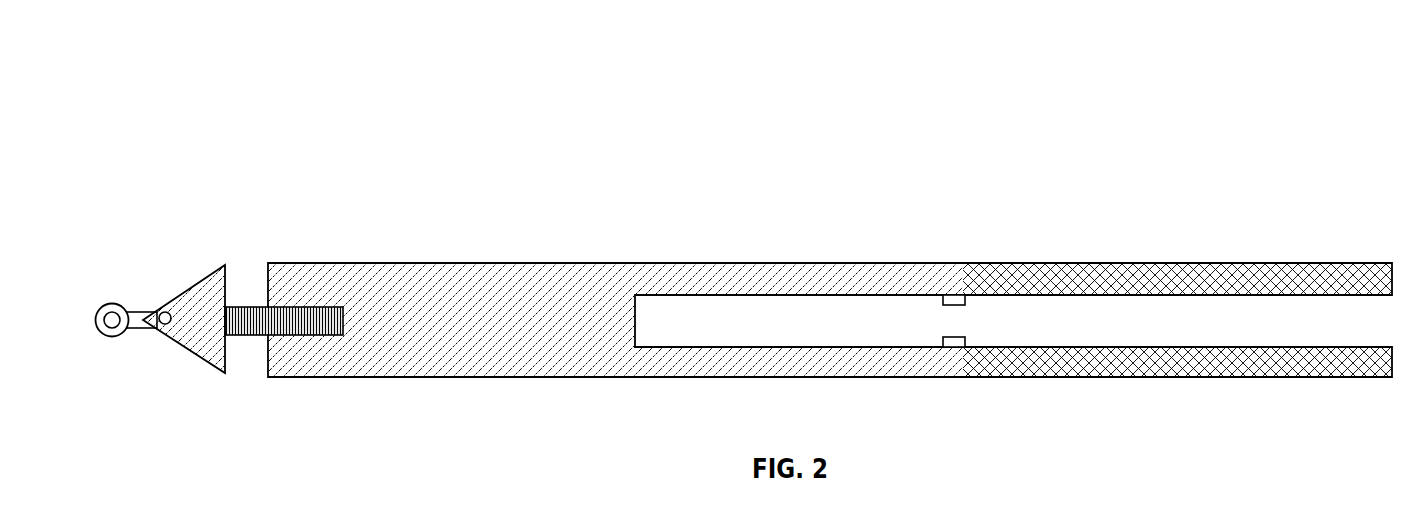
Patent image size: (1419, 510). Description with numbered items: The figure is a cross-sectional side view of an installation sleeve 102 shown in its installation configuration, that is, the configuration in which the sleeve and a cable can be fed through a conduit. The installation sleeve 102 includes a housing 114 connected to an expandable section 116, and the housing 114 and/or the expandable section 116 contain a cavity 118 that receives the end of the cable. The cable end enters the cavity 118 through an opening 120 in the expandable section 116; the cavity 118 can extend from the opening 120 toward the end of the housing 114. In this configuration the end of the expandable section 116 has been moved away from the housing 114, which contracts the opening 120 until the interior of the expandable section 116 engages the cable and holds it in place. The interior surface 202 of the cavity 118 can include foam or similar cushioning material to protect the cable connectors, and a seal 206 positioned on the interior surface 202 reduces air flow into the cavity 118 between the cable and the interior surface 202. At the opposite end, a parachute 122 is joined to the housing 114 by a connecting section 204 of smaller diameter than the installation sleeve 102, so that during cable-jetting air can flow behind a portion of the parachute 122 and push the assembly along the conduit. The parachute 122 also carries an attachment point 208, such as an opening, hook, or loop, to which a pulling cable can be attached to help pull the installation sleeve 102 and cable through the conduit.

The installation sleeve 102 is at (181, 114).
The housing 114 is at (570, 373).
The expandable section 116 is at (1243, 375).
The cavity 118 is at (633, 307).
The opening 120 is at (1392, 323).
The parachute 122 is at (223, 373).
The interior surface 202 is at (778, 290).
The connecting section 204 is at (251, 307).
The seal 206 is at (943, 300).
The attachment point 208 is at (112, 303).